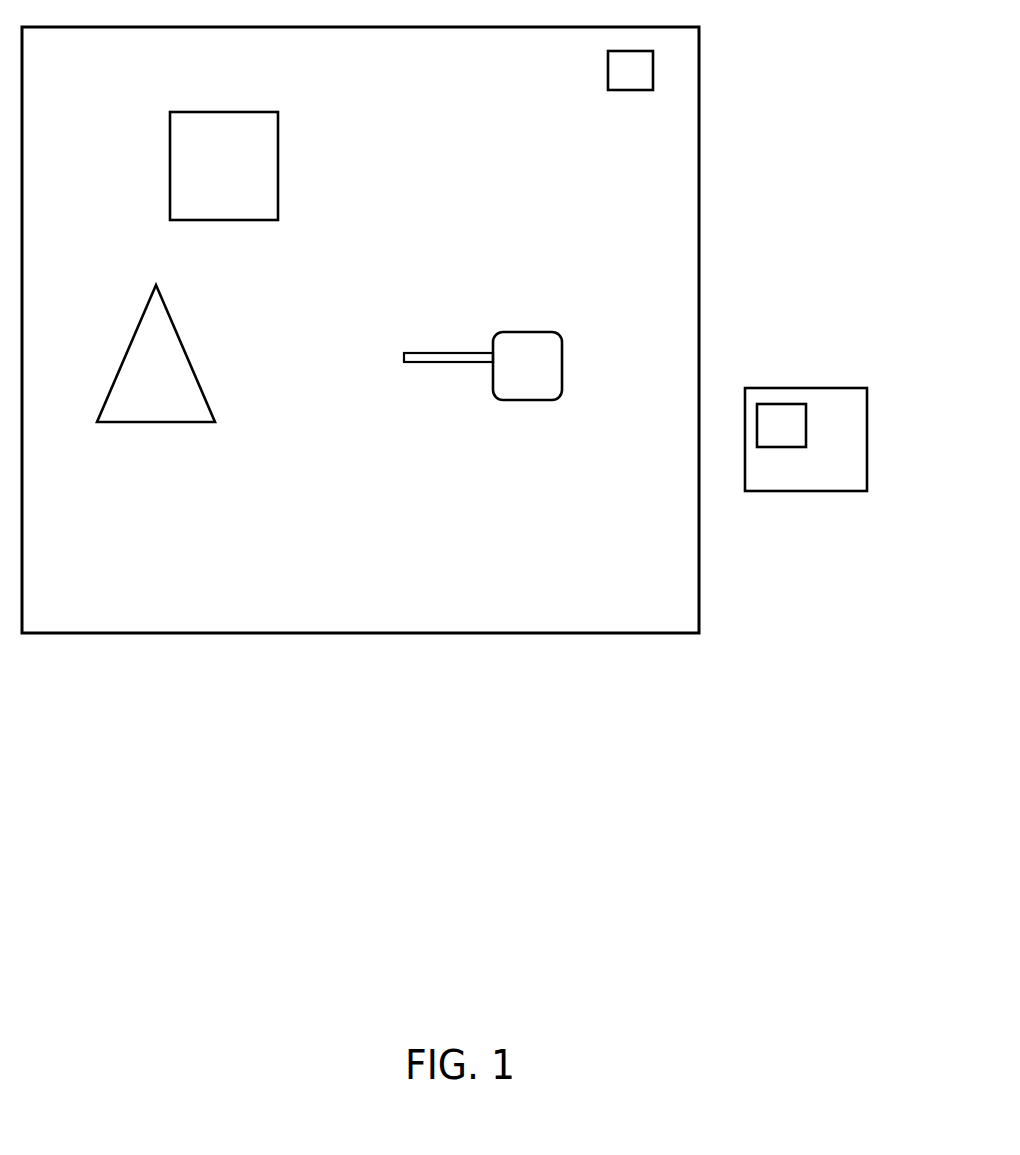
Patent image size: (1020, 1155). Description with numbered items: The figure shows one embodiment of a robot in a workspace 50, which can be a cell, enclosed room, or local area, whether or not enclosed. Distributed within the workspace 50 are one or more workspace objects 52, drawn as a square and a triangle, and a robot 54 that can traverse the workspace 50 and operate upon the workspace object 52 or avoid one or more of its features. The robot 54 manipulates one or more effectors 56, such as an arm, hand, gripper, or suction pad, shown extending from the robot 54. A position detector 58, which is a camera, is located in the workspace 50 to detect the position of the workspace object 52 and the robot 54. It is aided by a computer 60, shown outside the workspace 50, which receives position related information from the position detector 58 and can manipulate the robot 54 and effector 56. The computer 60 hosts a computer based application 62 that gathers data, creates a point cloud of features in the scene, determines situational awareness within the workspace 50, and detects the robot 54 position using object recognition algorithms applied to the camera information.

The workspace 50 is at (699, 134).
The workspace object 52 is at (278, 137).
The robot 54 is at (562, 343).
The effector 56 is at (425, 352).
The position detector 58 is at (608, 56).
The computer 60 is at (867, 407).
The computer based application 62 is at (769, 404).